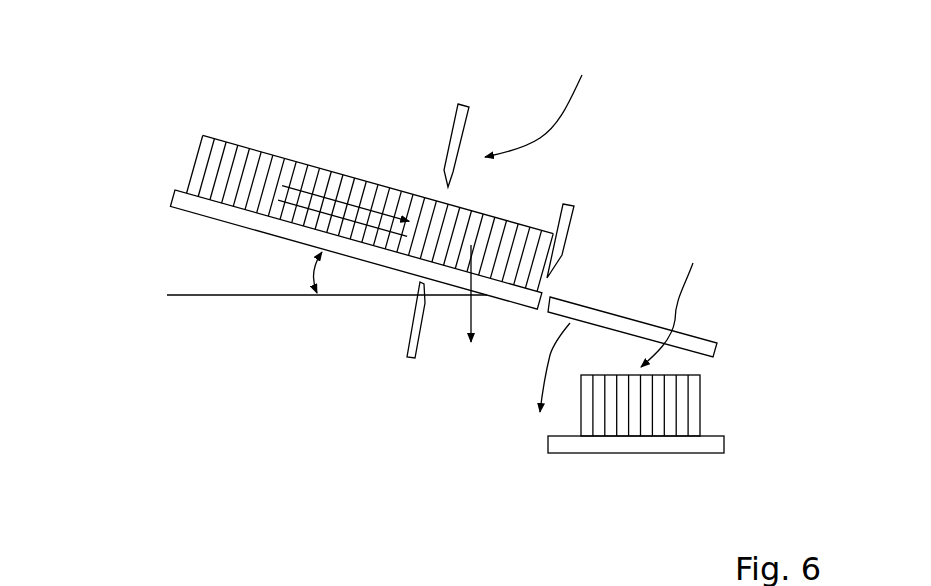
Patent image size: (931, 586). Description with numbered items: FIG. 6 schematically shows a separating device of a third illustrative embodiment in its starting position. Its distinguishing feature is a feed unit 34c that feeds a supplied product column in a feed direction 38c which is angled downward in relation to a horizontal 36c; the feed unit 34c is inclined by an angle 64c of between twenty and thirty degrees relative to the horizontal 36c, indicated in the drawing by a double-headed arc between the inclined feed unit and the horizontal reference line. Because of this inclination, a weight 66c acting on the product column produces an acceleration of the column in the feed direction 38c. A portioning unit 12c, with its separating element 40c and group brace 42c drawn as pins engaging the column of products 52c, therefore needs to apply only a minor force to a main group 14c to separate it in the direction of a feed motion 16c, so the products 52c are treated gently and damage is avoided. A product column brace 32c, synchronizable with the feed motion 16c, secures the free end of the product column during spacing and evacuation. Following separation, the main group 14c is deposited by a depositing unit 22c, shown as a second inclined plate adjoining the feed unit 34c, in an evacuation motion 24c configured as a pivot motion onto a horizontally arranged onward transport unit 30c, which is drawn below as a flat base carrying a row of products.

The portioning unit 12c is at (549, 103).
The main group 14c is at (680, 302).
The feed motion 16c is at (372, 188).
The depositing unit 22c is at (714, 347).
The evacuation motion 24c is at (550, 350).
The onward transport unit 30c is at (603, 443).
The product column brace 32c is at (418, 282).
The feed unit 34c is at (215, 208).
The horizontal 36c is at (207, 296).
The feed direction 38c is at (301, 183).
The separating element 40c is at (467, 107).
The group brace 42c is at (578, 208).
The product 52c is at (503, 226).
The angle 64c is at (312, 272).
The weight 66c is at (462, 322).